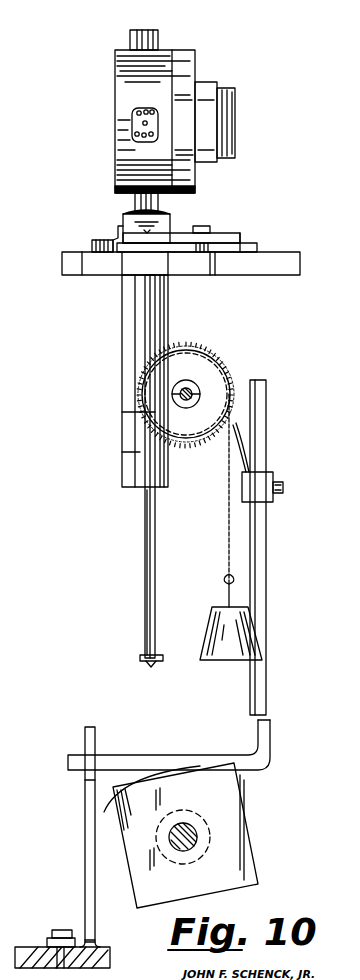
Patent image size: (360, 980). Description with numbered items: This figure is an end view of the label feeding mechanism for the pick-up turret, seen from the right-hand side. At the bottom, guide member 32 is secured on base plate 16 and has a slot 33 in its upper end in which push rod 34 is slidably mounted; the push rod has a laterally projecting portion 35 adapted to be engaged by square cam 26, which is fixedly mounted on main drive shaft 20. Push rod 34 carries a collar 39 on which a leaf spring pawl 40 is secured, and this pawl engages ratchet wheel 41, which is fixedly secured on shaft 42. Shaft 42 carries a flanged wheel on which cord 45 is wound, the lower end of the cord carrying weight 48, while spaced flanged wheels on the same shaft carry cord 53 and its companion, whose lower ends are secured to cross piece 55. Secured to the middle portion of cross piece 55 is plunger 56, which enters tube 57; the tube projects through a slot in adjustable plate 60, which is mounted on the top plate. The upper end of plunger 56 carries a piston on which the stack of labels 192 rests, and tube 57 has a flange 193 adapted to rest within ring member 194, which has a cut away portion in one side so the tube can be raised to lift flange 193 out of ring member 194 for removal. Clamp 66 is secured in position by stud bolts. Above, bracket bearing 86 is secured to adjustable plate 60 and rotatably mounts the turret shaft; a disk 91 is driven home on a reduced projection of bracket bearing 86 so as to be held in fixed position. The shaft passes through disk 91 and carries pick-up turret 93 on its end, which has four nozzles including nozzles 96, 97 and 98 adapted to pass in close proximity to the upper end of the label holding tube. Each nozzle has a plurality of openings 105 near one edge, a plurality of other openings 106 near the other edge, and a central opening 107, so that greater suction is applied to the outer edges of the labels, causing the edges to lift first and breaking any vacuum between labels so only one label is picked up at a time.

The base plate 16 is at (22, 950).
The main drive shaft 20 is at (197, 836).
The square cam 26 is at (235, 797).
The guide member 32 is at (95, 730).
The slot 33 is at (88, 781).
The push rod 34 is at (265, 390).
The laterally projecting portion 35 is at (118, 757).
The collar 39 is at (262, 482).
The leaf spring pawl 40 is at (246, 450).
The ratchet wheel 41 is at (220, 362).
The shaft 42 is at (188, 390).
The cord 45 is at (227, 520).
The weight 48 is at (215, 628).
The cord 53 is at (145, 448).
The cross piece 55 is at (140, 660).
The plunger 56 is at (145, 550).
The tube 57 is at (170, 300).
The adjustable plate 60 is at (252, 262).
The clamp 66 is at (225, 243).
The bracket bearing 86 is at (226, 95).
The disk 91 is at (188, 76).
The pick-up turret 93 is at (118, 94).
The nozzle 96 is at (158, 40).
The nozzle 97 is at (132, 126).
The nozzle 98 is at (160, 204).
The openings 105 is at (140, 136).
The openings 106 is at (168, 103).
The central opening 107 is at (143, 123).
The stack of labels 192 is at (123, 214).
The flange 193 is at (95, 250).
The ring member 194 is at (118, 240).